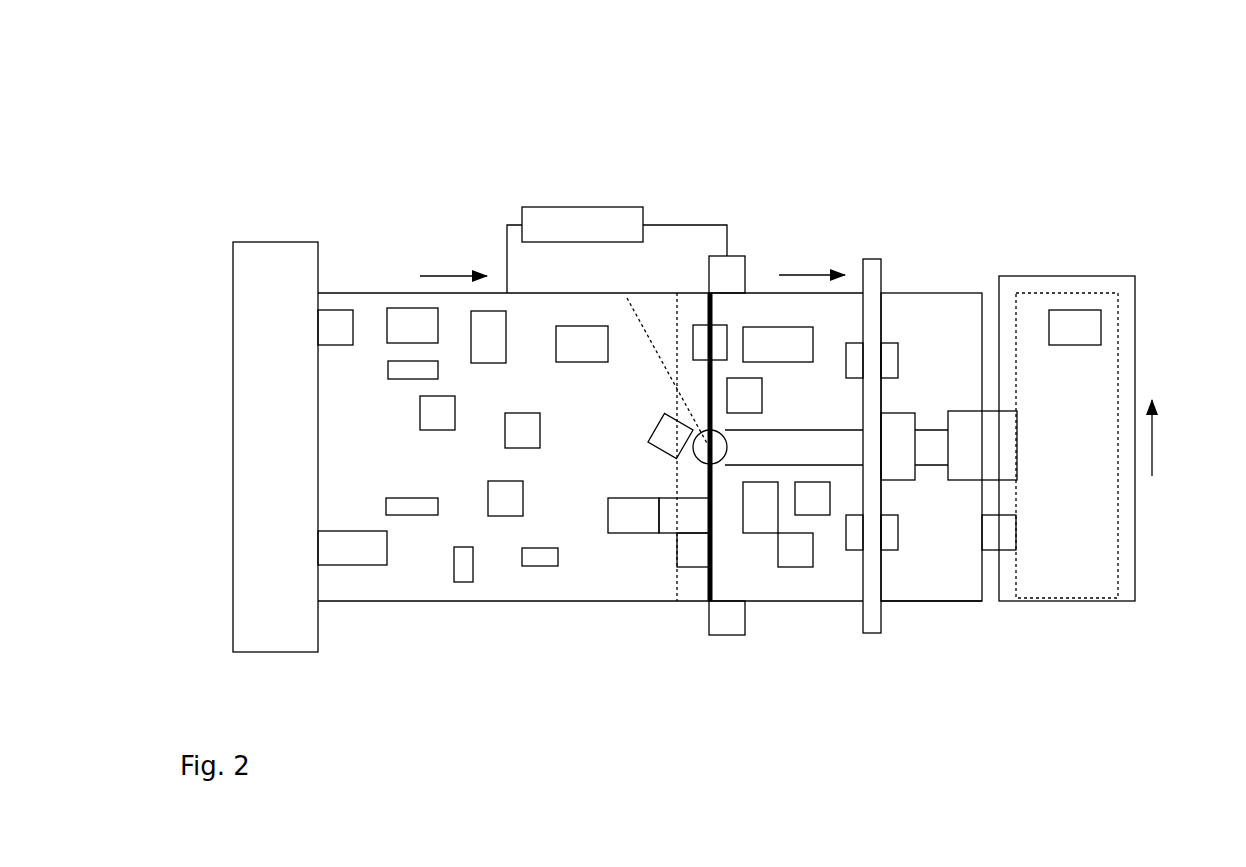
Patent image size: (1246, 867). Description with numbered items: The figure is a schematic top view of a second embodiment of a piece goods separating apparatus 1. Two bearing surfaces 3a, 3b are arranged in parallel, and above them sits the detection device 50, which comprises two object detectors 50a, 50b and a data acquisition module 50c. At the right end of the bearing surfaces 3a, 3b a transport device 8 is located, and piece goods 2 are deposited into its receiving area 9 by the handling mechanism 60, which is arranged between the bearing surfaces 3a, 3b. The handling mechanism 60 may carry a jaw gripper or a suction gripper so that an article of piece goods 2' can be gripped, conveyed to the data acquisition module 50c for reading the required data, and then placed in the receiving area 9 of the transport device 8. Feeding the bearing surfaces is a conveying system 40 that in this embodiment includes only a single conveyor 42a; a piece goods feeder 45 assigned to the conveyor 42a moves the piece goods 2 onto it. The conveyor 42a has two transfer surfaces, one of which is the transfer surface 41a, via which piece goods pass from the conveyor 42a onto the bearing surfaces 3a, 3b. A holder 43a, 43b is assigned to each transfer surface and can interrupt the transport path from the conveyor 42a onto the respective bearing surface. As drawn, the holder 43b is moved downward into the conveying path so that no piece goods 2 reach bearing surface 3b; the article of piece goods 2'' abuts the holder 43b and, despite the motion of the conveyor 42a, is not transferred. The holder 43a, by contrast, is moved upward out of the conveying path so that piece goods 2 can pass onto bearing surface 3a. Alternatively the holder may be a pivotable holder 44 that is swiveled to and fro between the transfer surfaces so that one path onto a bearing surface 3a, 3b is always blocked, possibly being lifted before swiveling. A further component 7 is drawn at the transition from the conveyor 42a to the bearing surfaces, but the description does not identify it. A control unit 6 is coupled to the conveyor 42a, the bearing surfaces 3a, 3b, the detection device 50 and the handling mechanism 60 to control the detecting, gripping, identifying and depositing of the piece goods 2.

The separating apparatus 1 is at (1050, 207).
The piece goods 2 is at (355, 256).
The piece goods (gripped article) 2' is at (985, 613).
The piece goods (held article) 2'' is at (645, 604).
The bearing surface 3a is at (914, 310).
The bearing surface 3b is at (950, 585).
The control unit 6 is at (590, 222).
The deflection roller 7 is at (728, 275).
The transport device 8 is at (1100, 600).
The receiving area 9 is at (1033, 585).
The conveying system 40 is at (538, 618).
The transfer surface 41a is at (694, 312).
The conveyor 42a is at (420, 567).
The holder 43a is at (713, 308).
The holder 43b is at (713, 550).
The pivotable holder 44 is at (643, 326).
The piece goods feeder 45 is at (267, 242).
The detection device 50 is at (857, 650).
The object detector 50a is at (887, 358).
The object detector 50b is at (888, 533).
The data acquisition module 50c is at (898, 447).
The handling mechanism 60 is at (978, 423).